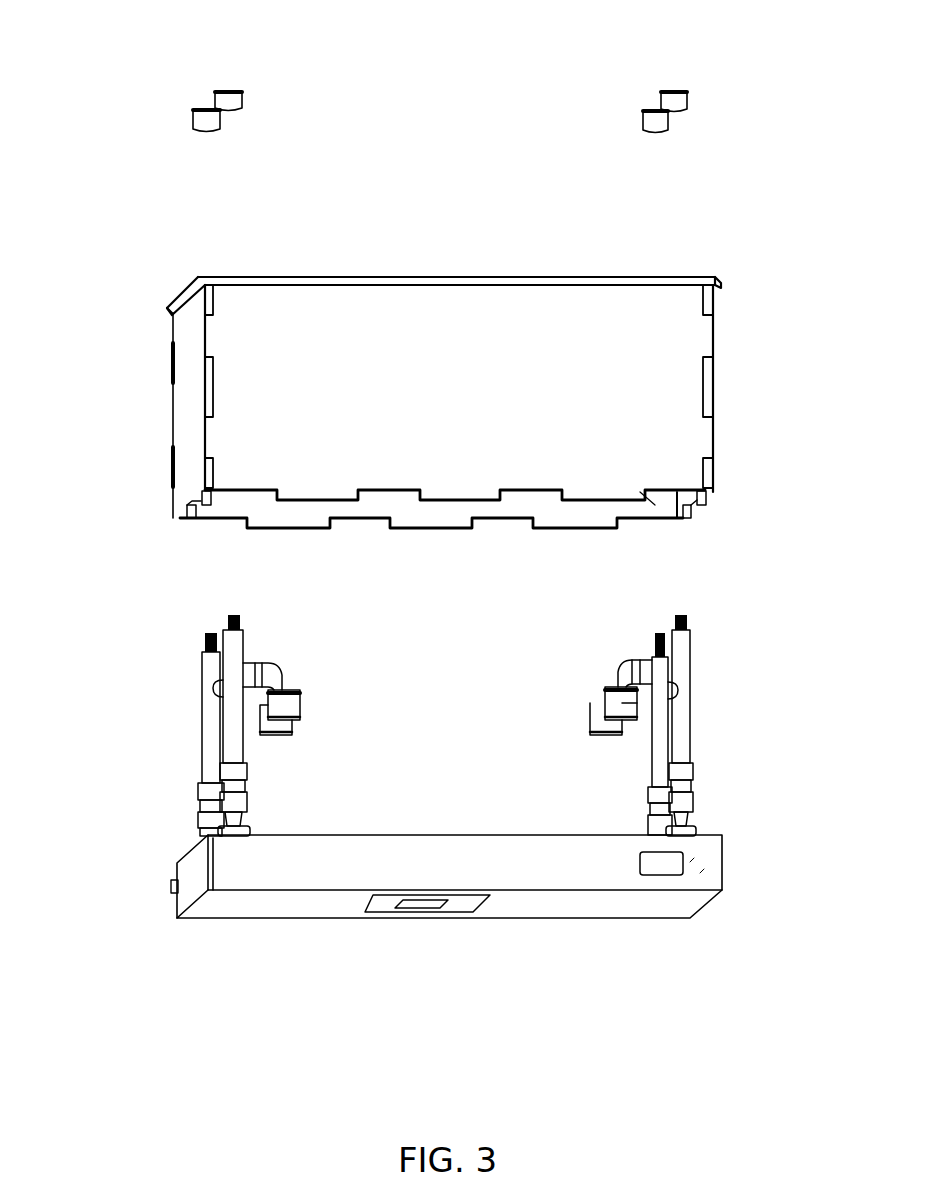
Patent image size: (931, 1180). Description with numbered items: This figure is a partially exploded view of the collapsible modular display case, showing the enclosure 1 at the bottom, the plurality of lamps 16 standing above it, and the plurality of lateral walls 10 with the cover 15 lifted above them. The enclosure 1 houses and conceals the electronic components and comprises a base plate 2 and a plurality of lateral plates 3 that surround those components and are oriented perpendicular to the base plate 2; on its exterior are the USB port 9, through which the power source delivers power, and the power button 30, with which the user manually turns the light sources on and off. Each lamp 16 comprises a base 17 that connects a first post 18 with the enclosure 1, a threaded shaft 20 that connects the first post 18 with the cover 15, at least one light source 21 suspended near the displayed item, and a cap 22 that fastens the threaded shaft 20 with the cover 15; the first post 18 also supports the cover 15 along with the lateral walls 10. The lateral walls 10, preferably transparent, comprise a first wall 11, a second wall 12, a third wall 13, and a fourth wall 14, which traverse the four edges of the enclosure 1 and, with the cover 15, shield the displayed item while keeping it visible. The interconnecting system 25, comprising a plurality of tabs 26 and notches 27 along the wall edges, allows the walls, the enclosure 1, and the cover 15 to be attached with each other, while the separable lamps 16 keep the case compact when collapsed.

The enclosure 1 is at (168, 866).
The base plate 2 is at (305, 910).
The lateral plates 3 is at (437, 848).
The USB port 9 is at (456, 906).
The lateral walls 10 is at (155, 378).
The first wall 11 is at (655, 505).
The second wall 12 is at (697, 510).
The third wall 13 is at (680, 300).
The fourth wall 14 is at (185, 328).
The cover 15 is at (258, 287).
The lamps 16 is at (175, 669).
The base 17 is at (248, 832).
The first post 18 is at (204, 700).
The threaded shaft 20 is at (208, 638).
The light source 21 is at (301, 708).
The cap 22 is at (206, 106).
The interconnecting system 25 is at (203, 395).
The tabs 26 is at (190, 522).
The notches 27 is at (192, 498).
The power button 30 is at (168, 892).